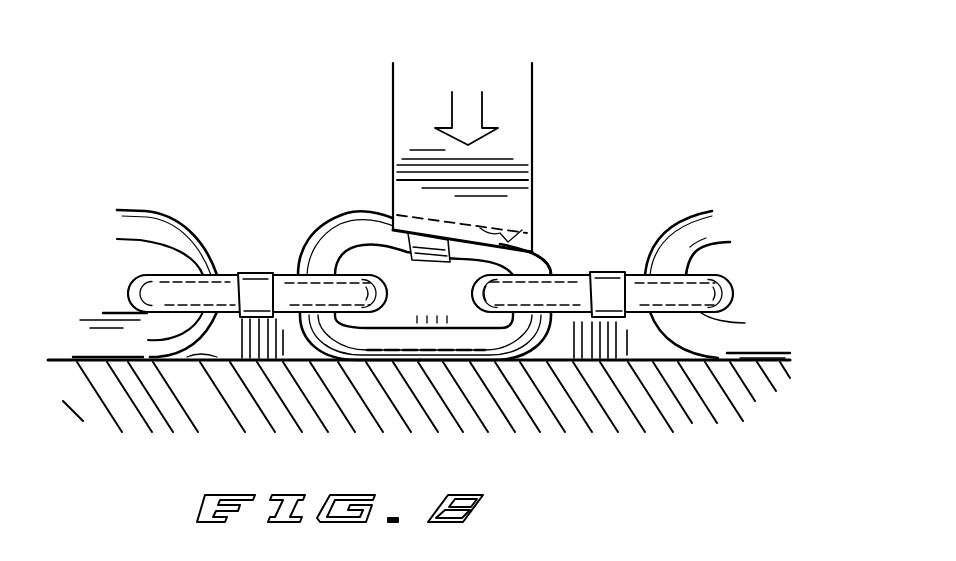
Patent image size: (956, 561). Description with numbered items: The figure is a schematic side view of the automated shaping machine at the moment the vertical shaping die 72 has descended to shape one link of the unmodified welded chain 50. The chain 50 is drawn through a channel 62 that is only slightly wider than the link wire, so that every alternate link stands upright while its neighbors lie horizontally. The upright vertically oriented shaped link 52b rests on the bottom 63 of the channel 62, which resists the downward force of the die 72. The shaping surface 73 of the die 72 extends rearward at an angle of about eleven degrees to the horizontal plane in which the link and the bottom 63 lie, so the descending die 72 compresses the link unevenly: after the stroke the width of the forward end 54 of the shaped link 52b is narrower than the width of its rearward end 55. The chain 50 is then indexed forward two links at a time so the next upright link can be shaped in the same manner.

The unmodified welded chain 50 is at (153, 207).
The vertically oriented shaped link 52b is at (313, 247).
The forward end 54 is at (537, 258).
The rearward end 55 is at (378, 213).
The channel 62 is at (645, 355).
The bottom of the channel 63 is at (173, 362).
The vertical shaping die 72 is at (533, 110).
The shaping surface 73 is at (510, 230).